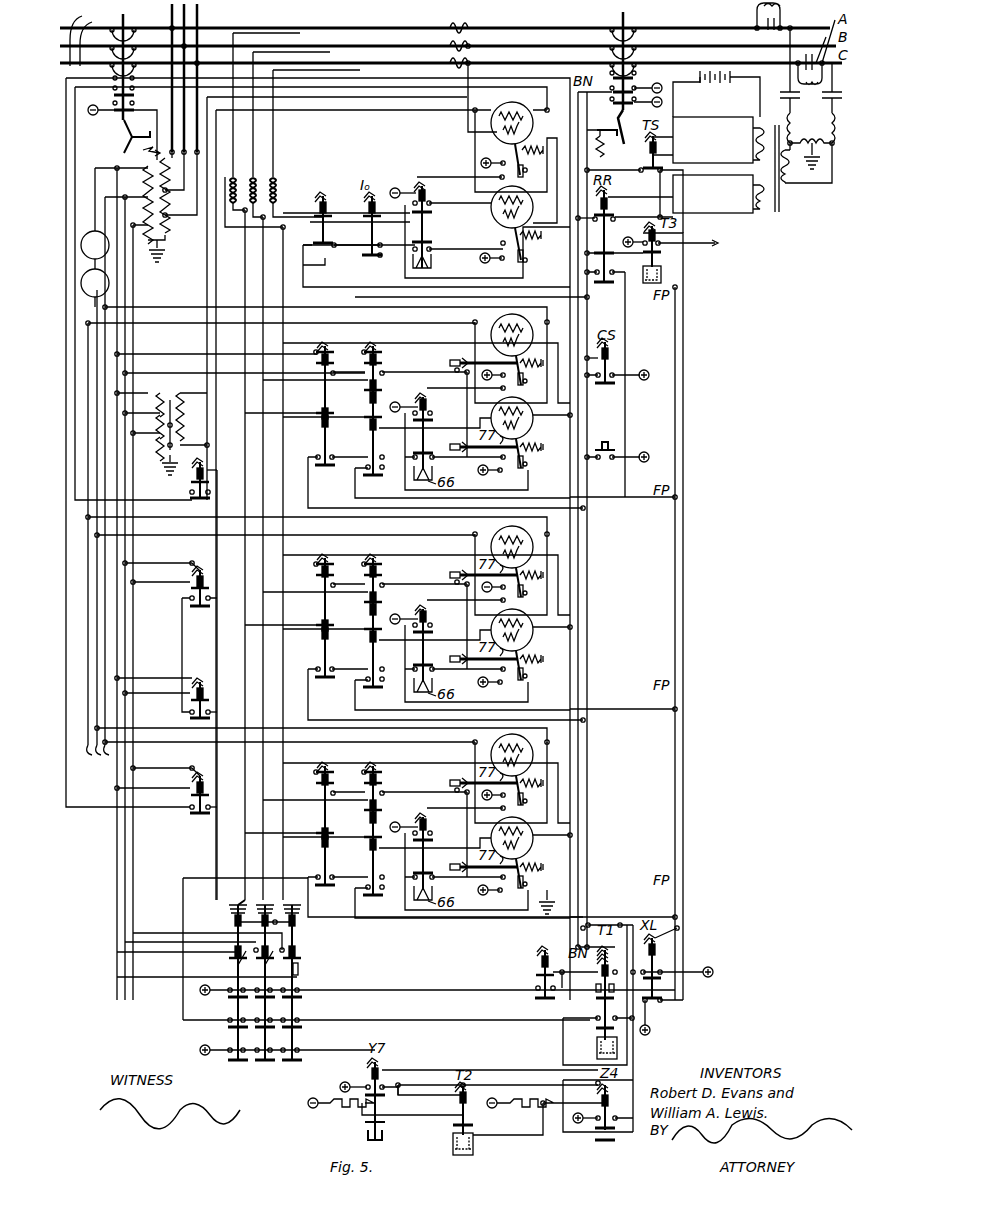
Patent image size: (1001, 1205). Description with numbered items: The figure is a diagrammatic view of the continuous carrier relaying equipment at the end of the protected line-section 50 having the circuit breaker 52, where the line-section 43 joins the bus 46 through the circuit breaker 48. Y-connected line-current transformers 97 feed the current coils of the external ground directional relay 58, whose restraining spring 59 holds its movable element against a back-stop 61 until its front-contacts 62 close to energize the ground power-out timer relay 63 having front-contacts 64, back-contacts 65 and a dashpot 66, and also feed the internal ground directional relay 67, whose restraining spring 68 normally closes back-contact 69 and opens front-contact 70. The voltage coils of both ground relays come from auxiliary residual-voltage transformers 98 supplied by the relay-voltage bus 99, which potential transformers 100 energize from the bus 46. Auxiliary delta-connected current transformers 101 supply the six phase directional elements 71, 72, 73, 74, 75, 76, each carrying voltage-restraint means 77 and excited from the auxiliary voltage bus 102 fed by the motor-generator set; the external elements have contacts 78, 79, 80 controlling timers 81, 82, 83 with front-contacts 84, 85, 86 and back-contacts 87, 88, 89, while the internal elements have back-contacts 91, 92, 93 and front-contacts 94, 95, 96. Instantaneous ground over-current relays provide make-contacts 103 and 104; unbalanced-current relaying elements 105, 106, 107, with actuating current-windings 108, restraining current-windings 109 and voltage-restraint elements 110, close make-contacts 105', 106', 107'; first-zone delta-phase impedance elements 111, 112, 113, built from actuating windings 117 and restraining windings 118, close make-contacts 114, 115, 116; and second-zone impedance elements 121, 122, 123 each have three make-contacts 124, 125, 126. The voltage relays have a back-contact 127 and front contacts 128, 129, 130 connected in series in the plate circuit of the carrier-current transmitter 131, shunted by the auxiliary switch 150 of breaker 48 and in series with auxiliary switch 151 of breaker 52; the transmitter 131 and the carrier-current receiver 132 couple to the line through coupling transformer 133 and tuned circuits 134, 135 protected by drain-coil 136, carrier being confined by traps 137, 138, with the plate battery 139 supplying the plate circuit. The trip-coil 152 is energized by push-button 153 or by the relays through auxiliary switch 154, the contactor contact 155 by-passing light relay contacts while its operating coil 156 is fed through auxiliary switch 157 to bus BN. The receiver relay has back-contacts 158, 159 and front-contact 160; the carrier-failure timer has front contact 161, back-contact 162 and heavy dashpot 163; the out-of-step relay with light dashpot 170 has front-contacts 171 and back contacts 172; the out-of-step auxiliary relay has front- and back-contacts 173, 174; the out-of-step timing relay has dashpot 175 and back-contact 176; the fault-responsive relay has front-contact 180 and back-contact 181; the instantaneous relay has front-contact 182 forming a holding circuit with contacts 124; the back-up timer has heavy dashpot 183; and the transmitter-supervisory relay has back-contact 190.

The line-section 43 is at (74, 30).
The bus 46 is at (193, 14).
The circuit breaker 48 is at (122, 28).
The line-section 50 is at (826, 26).
The circuit breaker 52 is at (622, 26).
The external ground directional relay 58 is at (535, 114).
The restraining spring 59 is at (524, 156).
The back-stop 61 is at (527, 176).
The front-contacts 62 is at (500, 158).
The ground power-out timer relay 63 is at (424, 176).
The front-contacts 64 is at (424, 206).
The back-contacts 65 is at (432, 245).
The dashpot 66 is at (428, 263).
The internal ground directional relay 67 is at (533, 216).
The restraining spring 68 is at (541, 248).
The back-contact 69 is at (525, 262).
The front-contact 70 is at (498, 244).
The external phase-AB directional element 71 is at (535, 326).
The internal phase-AB directional element 72 is at (530, 426).
The external phase-BC directional element 73 is at (532, 547).
The internal phase-BC directional element 74 is at (531, 630).
The external phase-CA directional element 75 is at (532, 755).
The internal phase-CA directional element 76 is at (531, 838).
The voltage-restraint means 77 is at (453, 361).
The contacts 78 is at (521, 384).
The contacts 79 is at (515, 589).
The contacts 80 is at (503, 800).
The timer 81 is at (427, 380).
The timer 82 is at (455, 592).
The timer 83 is at (459, 800).
The front-contacts 84 is at (425, 412).
The front-contacts 85 is at (420, 643).
The front-contacts 86 is at (421, 850).
The back-contacts 87 is at (432, 460).
The back-contacts 88 is at (455, 675).
The back-contacts 89 is at (455, 883).
The back-contacts 91 is at (525, 474).
The back-contacts 92 is at (534, 675).
The back-contacts 93 is at (543, 886).
The front-contacts 94 is at (503, 483).
The front-contacts 95 is at (492, 689).
The front-contacts 96 is at (492, 897).
The line-current transformers 97 is at (456, 28).
The auxiliary residual-voltage transformers 98 is at (164, 389).
The relay-voltage bus 99 is at (136, 293).
The potential transformers 100 is at (172, 230).
The auxiliary delta-connected current transformers 101 is at (280, 182).
The auxiliary voltage bus 102 is at (108, 350).
The make-contact 103 is at (320, 252).
The make-contacts 104 is at (334, 244).
The unbalanced-current relaying element 105 is at (373, 400).
The make-contact 105' is at (462, 476).
The unbalanced-current relaying element 106 is at (373, 612).
The make-contact 106' is at (462, 688).
The unbalanced-current relaying element 107 is at (373, 820).
The make-contact 107' is at (462, 896).
The actuating current-winding 108 is at (366, 416).
The restraining current-winding 109 is at (358, 388).
The voltage-restraint element 110 is at (364, 361).
The first-zone delta-phase impedance element 111 is at (334, 334).
The first-zone delta-phase impedance element 112 is at (323, 607).
The first-zone delta-phase impedance element 113 is at (323, 815).
The make-contact 114 is at (338, 448).
The make-contact 115 is at (445, 693).
The make-contact 116 is at (445, 896).
The current-responsive actuating windings 117 is at (316, 410).
The voltage-responsive restraining windings 118 is at (316, 360).
The second-zone delta-phase impedance element 121 is at (238, 897).
The second-zone delta-phase impedance element 122 is at (263, 898).
The second-zone delta-phase impedance element 123 is at (292, 900).
The make-contacts 124 is at (297, 989).
The make-contacts 125 is at (297, 1019).
The make-contacts 126 is at (297, 1049).
The back-contact 127 is at (206, 500).
The front contact 128 is at (206, 706).
The front contact 129 is at (208, 607).
The front contact 130 is at (206, 812).
The carrier-current transmitter 131 is at (709, 140).
The carrier-current receiver 132 is at (680, 196).
The coupling transformer 133 is at (780, 202).
The tuned circuit 134 is at (790, 104).
The tuned circuit 135 is at (832, 104).
The grounded drain-coil 136 is at (828, 138).
The trap 137 is at (753, 12).
The trap 138 is at (799, 72).
The plate battery 139 is at (696, 72).
The auxiliary switch 150 is at (133, 88).
The auxiliary switch 151 is at (618, 72).
The trip-coil 152 is at (604, 144).
The push-button 153 is at (592, 444).
The auxiliary switch 154 is at (616, 112).
The contact 155 is at (597, 384).
The operating coil 156 is at (608, 352).
The auxiliary switch 157 is at (614, 95).
The back-contact 158 is at (616, 214).
The back-contact 159 is at (611, 258).
The front-contact 160 is at (594, 278).
The front contact 161 is at (663, 244).
The back-contact 162 is at (663, 256).
The heavy dashpot 163 is at (662, 277).
The light dashpot 170 is at (380, 1138).
The front-contacts 171 is at (366, 1080).
The back contacts 172 is at (385, 1099).
The front-contact 173 is at (598, 1138).
The back-contact 174 is at (602, 1144).
The dashpot 175 is at (470, 1159).
The back-contact 176 is at (470, 1133).
The front-contact 180 is at (664, 971).
The back-contact 181 is at (656, 998).
The front-contact 182 is at (534, 983).
The heavy dashpot 183 is at (598, 1055).
The back-contact 190 is at (640, 178).